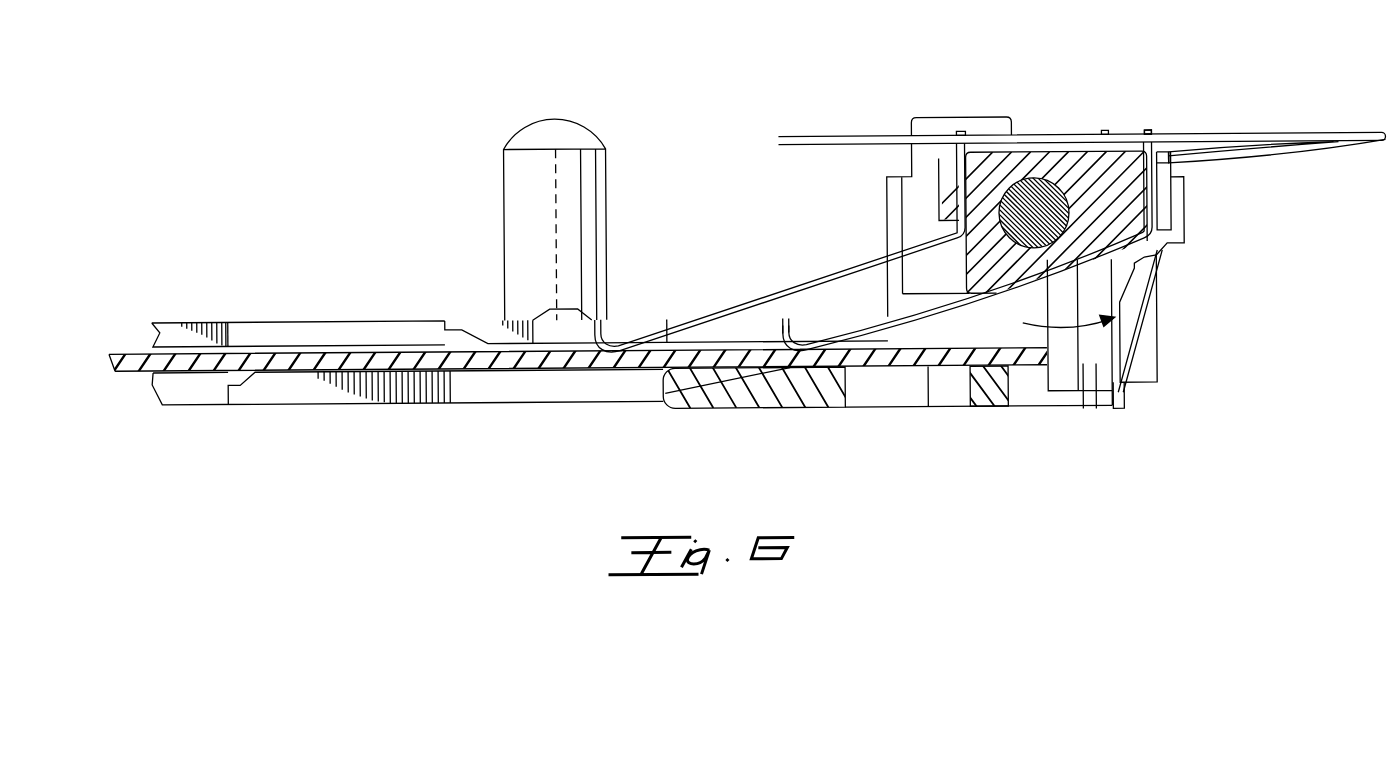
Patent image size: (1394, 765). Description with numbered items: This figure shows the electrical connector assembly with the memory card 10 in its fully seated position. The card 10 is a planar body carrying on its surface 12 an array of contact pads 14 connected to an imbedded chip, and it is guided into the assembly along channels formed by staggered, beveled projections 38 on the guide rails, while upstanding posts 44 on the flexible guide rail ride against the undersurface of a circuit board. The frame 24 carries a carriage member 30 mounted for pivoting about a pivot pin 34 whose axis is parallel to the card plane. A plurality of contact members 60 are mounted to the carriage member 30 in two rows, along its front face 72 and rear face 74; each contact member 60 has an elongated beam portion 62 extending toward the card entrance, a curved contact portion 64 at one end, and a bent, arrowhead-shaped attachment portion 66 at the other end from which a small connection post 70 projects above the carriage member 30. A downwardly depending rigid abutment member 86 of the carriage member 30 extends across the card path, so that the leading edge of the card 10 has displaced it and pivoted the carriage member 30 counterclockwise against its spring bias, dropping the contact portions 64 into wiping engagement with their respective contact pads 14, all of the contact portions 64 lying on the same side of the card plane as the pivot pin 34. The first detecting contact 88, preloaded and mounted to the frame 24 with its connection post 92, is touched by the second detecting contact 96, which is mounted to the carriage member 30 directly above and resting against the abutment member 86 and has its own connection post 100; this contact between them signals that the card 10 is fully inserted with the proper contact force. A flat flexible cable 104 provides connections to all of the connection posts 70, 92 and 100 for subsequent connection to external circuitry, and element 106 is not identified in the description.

The memory card 10 is at (145, 373).
The surface 12 is at (132, 352).
The contact pads 14 is at (618, 357).
The frame 24 is at (1150, 363).
The carriage member 30 is at (1167, 204).
The pivot pin 34 is at (1042, 205).
The projections 38 is at (490, 330).
The upstanding posts 44 is at (583, 185).
The contact members 60 is at (636, 337).
The beam portion 62 is at (952, 324).
The contact portion 64 is at (770, 347).
The attachment portion 66 is at (1185, 250).
The connection post 70 is at (1153, 137).
The front face 72 is at (930, 272).
The rear face 74 is at (1175, 172).
The abutment member 86 is at (1093, 396).
The first detecting contact 88 is at (1128, 378).
The connection post 92 is at (1187, 152).
The second detecting contact 96 is at (1108, 402).
The connection post 100 is at (1107, 137).
The flat flexible cable 104 is at (1340, 140).
The insert 106 is at (990, 400).